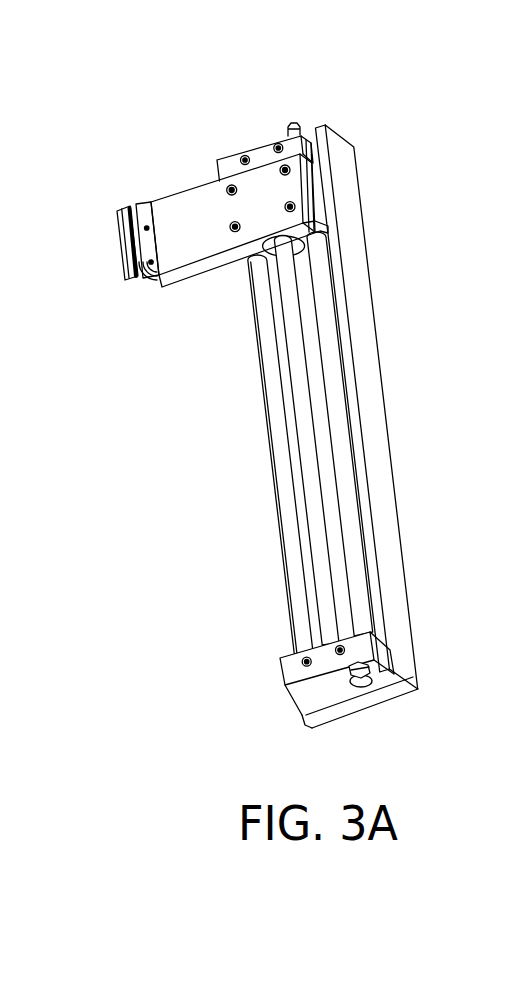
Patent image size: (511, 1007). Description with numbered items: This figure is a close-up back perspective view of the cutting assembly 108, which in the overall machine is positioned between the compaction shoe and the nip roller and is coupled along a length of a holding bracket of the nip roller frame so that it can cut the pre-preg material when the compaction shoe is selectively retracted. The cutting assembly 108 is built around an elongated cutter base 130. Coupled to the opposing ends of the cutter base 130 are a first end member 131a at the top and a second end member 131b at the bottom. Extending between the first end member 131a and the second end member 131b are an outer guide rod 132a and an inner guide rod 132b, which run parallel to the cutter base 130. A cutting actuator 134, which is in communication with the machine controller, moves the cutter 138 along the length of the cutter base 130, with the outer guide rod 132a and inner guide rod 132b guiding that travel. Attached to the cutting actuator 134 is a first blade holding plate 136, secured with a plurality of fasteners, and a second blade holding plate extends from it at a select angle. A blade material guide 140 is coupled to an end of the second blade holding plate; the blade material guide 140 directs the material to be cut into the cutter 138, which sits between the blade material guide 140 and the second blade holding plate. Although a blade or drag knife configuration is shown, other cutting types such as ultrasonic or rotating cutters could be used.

The cutting assembly 108 is at (419, 130).
The cutter base 130 is at (405, 623).
The first end member 131a is at (293, 124).
The second end member 131b is at (392, 682).
The outer guide rod 132a is at (338, 403).
The inner guide rod 132b is at (325, 548).
The cutting actuator 134 is at (317, 197).
The first blade holding plate 136 is at (262, 196).
The cutter 138 is at (141, 242).
The blade material guide 140 is at (120, 227).